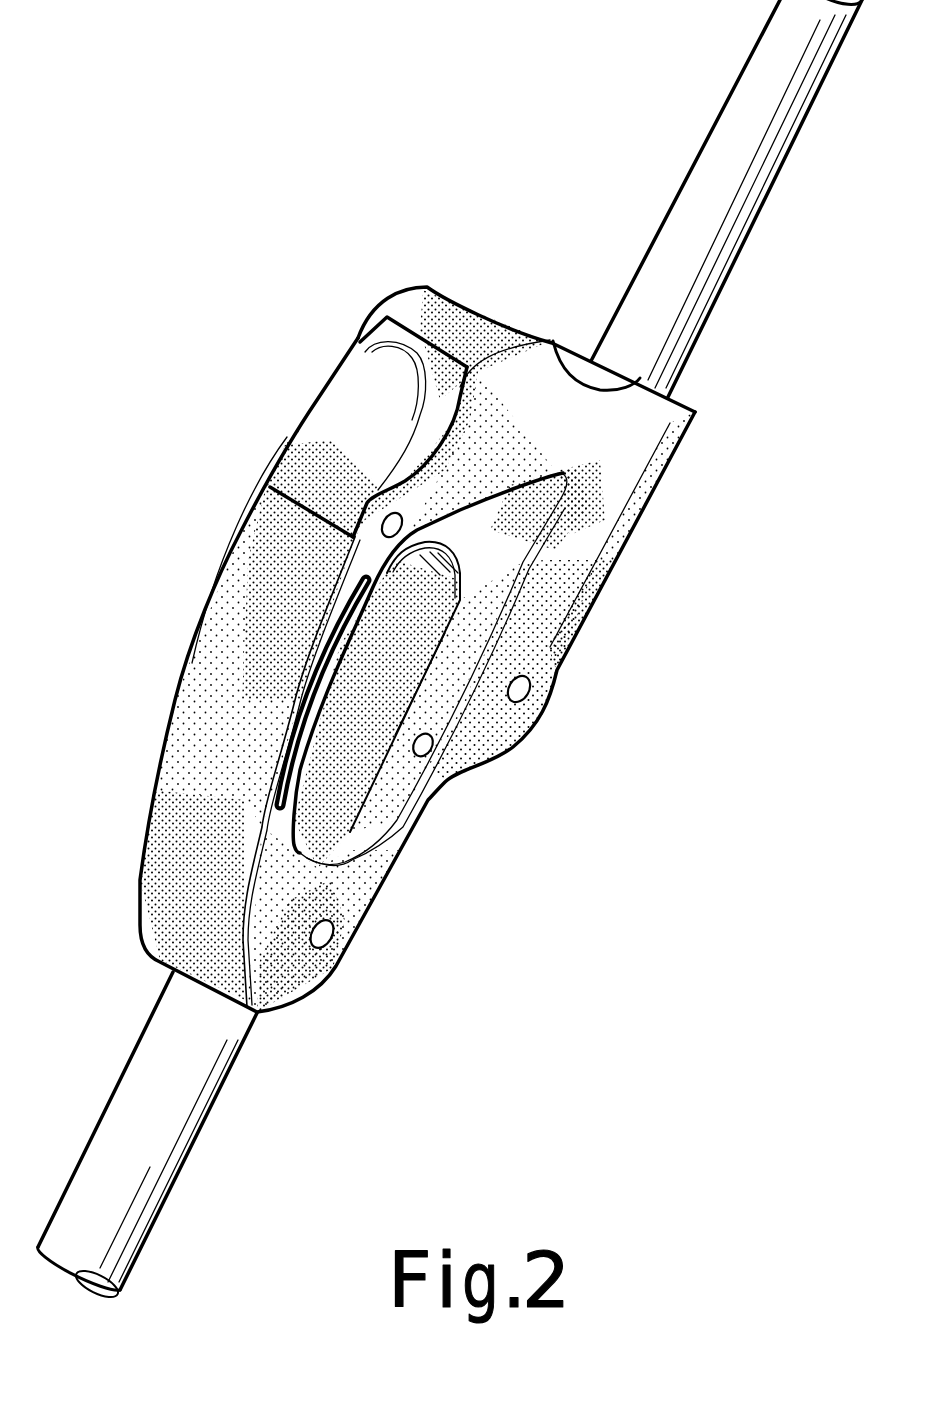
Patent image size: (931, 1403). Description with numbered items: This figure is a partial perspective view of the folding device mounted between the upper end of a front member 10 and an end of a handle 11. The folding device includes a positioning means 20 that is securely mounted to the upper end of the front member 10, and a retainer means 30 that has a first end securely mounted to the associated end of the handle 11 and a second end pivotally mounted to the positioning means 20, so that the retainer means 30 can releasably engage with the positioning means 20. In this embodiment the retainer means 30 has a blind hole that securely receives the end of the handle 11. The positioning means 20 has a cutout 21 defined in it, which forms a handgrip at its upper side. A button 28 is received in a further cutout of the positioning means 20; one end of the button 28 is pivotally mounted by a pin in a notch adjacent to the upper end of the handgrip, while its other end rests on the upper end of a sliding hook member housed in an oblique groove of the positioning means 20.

The front member 10 is at (168, 1158).
The handle 11 is at (713, 262).
The positioning means 20 is at (178, 782).
The cutout 21 is at (355, 752).
The button 28 is at (348, 407).
The retainer means 30 is at (639, 521).